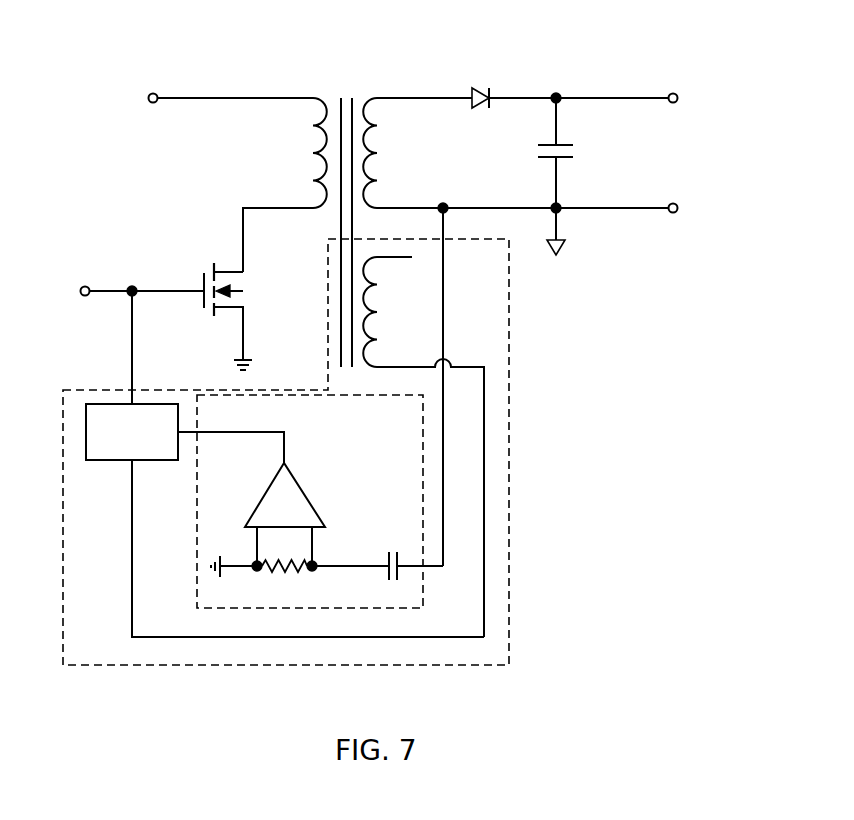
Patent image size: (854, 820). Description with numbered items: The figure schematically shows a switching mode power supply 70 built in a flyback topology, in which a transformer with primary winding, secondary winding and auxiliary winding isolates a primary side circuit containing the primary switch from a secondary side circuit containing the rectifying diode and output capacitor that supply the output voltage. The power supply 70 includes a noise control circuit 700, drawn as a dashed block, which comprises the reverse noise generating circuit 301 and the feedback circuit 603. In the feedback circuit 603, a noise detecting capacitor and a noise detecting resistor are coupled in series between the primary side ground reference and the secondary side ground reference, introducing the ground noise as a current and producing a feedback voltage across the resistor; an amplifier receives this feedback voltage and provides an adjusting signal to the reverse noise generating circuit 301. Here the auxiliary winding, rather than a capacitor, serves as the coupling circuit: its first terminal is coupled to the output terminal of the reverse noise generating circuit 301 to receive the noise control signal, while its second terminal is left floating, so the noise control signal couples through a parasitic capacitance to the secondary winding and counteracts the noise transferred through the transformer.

The switching mode power supply 70 is at (653, 38).
The noise control circuit 700 is at (104, 656).
The feedback circuit 603 is at (414, 419).
The reverse noise generating circuit 301 is at (132, 432).